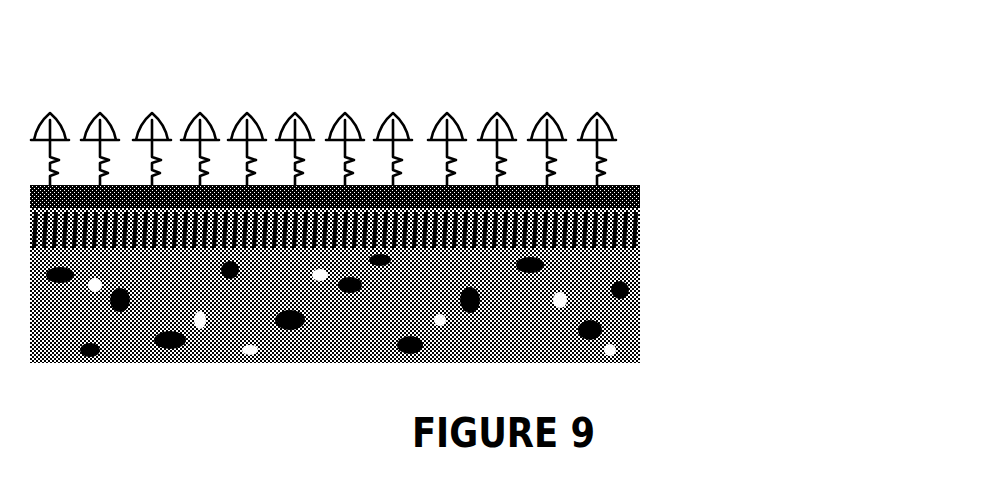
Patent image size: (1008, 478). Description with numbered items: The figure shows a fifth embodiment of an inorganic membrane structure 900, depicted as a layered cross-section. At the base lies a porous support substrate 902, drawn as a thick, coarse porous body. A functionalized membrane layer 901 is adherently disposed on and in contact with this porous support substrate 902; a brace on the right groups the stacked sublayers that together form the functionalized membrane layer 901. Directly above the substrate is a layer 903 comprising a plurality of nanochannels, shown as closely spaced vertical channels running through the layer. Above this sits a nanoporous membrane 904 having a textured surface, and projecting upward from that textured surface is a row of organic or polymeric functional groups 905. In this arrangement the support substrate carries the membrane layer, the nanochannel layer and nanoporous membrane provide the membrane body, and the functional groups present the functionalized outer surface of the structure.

The inorganic membrane structure 900 is at (106, 72).
The functionalized membrane layer 901 is at (807, 117).
The porous support substrate 902 is at (642, 310).
The layer comprising a plurality of nanochannels 903 is at (642, 240).
The nanoporous membrane 904 is at (642, 195).
The organic or polymeric functional groups 905 is at (627, 140).